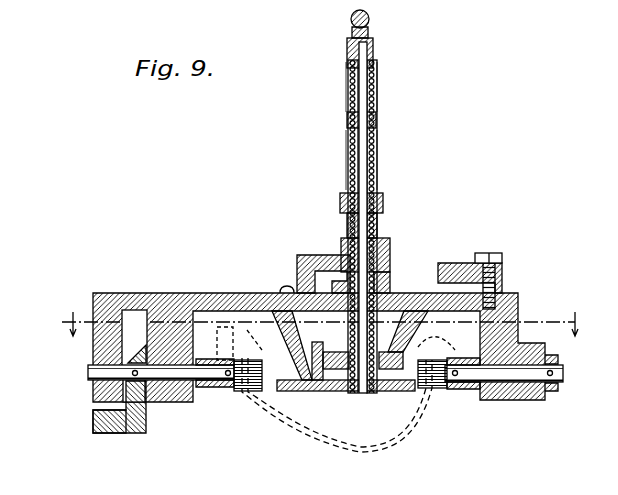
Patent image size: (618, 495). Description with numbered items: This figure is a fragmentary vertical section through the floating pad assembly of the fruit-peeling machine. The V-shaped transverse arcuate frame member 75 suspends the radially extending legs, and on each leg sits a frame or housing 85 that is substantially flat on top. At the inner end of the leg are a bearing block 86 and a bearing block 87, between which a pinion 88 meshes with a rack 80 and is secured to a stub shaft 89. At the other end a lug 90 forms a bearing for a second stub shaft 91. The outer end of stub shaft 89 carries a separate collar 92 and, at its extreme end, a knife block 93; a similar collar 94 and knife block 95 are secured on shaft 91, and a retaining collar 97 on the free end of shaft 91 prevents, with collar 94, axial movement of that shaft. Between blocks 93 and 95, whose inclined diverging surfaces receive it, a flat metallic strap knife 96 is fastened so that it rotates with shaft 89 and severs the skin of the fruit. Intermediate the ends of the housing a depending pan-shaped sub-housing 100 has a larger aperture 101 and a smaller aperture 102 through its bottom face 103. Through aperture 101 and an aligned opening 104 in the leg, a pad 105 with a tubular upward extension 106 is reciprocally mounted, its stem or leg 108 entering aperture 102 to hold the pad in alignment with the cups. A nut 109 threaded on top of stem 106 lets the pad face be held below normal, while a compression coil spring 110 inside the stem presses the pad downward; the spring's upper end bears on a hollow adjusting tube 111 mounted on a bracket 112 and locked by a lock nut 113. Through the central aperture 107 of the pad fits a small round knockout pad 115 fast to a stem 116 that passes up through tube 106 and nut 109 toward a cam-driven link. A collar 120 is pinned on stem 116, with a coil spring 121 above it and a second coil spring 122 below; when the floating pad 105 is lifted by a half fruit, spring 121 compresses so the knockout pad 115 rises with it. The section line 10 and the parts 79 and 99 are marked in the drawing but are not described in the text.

The section line 10 is at (325, 325).
The transverse arcuate frame member 75 is at (505, 270).
The foot 79 is at (93, 426).
The rack 80 is at (140, 402).
The housing 85 is at (190, 293).
The bearing block 86 is at (94, 353).
The bearing block 87 is at (177, 402).
The pinion 88 is at (129, 356).
The stub shaft 89 is at (205, 382).
The lug 90 is at (518, 320).
The second stub shaft 91 is at (520, 372).
The collar 92 is at (205, 388).
The knife block 93 is at (247, 393).
The collar 94 is at (473, 386).
The knife block 95 is at (447, 390).
The knife 96 is at (373, 463).
The retaining collar 97 is at (553, 389).
The knob 99 is at (360, 39).
The sub-housing 100 is at (288, 335).
The aperture 101 is at (318, 343).
The aperture 102 is at (336, 384).
The bottom face 103 is at (388, 393).
The opening 104 is at (396, 284).
The pad 105 is at (300, 394).
The tubular extension 106 is at (339, 394).
The central aperture 107 is at (372, 393).
The stem 108 is at (322, 361).
The nut 109 is at (392, 298).
The compression coil spring 110 is at (420, 327).
The adjusting tube 111 is at (383, 256).
The bracket 112 is at (301, 258).
The lock nut 113 is at (379, 227).
The knockout pad 115 is at (371, 395).
The stem 116 is at (373, 200).
The collar 120 is at (377, 121).
The coil spring 121 is at (372, 97).
The second coil spring 122 is at (371, 165).